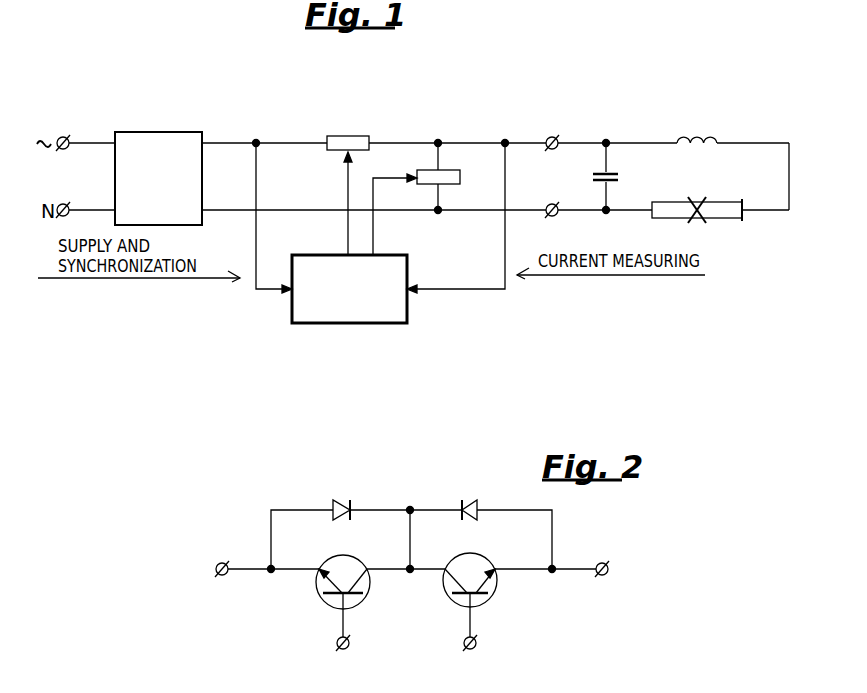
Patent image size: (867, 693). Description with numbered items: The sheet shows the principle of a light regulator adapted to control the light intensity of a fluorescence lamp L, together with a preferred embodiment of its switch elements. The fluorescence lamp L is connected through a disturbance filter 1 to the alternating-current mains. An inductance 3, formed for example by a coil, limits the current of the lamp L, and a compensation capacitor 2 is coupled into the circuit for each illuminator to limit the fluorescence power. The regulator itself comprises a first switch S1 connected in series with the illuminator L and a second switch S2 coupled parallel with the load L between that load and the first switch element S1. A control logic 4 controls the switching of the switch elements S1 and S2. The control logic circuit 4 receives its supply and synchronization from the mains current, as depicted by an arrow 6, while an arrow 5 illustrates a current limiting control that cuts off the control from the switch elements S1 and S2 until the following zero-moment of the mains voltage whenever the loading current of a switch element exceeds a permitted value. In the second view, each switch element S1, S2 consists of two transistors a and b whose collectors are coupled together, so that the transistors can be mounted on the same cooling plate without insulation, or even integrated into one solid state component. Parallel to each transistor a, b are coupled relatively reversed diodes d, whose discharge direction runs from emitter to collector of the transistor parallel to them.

In FIG. 1, the disturbance filter 1 is at (160, 140).
In FIG. 1, the compensation capacitor 2 is at (610, 172).
In FIG. 1, the inductance 3 is at (695, 138).
In FIG. 1, the control logic 4 is at (393, 300).
In FIG. 1, the arrow 5 is at (498, 290).
In FIG. 1, the arrow 6 is at (256, 290).
In FIG. 1, the fluorescence lamp L is at (722, 212).
In FIG. 1, the first switch S1 is at (348, 130).
In FIG. 2, the first switch S1 is at (558, 593).
In FIG. 1, the second switch S2 is at (455, 176).
In FIG. 2, the second switch S2 is at (412, 554).
In FIG. 2, the transistor a is at (486, 600).
In FIG. 2, the transistor b is at (354, 600).
In FIG. 2, the diode d is at (342, 498).